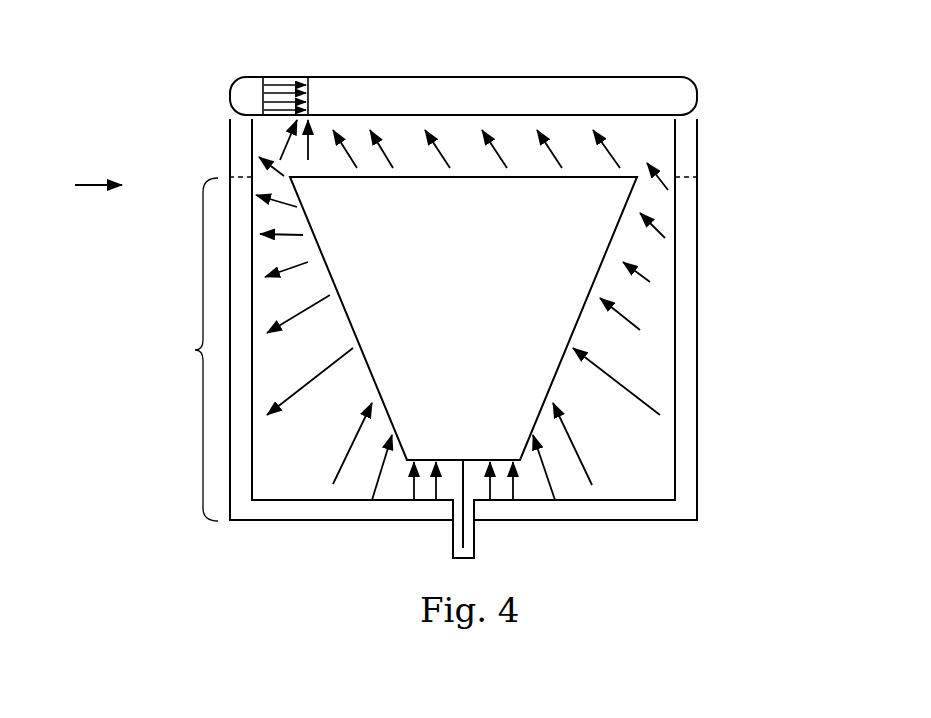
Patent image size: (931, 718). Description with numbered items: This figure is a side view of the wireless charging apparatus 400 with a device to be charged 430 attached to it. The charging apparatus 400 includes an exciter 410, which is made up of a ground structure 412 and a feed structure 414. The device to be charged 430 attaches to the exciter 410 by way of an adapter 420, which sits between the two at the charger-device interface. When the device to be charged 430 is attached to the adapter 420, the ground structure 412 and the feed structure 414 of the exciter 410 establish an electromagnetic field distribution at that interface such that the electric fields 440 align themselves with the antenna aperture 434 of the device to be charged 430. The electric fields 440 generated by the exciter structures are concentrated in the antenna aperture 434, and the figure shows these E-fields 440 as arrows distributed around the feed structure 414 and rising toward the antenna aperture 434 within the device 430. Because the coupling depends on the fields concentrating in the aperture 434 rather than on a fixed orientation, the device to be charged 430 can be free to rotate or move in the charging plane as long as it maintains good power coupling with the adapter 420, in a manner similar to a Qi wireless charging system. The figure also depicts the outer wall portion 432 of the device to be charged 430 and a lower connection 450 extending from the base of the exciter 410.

The wireless charging apparatus 400 is at (732, 135).
The exciter 410 is at (187, 349).
The ground structure 412 is at (268, 522).
The feed structure 414 is at (481, 315).
The adapter 420 is at (229, 158).
The device to be charged 430 is at (210, 100).
The manifold top wall 432 is at (516, 72).
The antenna aperture 434 is at (275, 72).
The electric fields 440 is at (297, 392).
The outlet pipe 450 is at (474, 543).